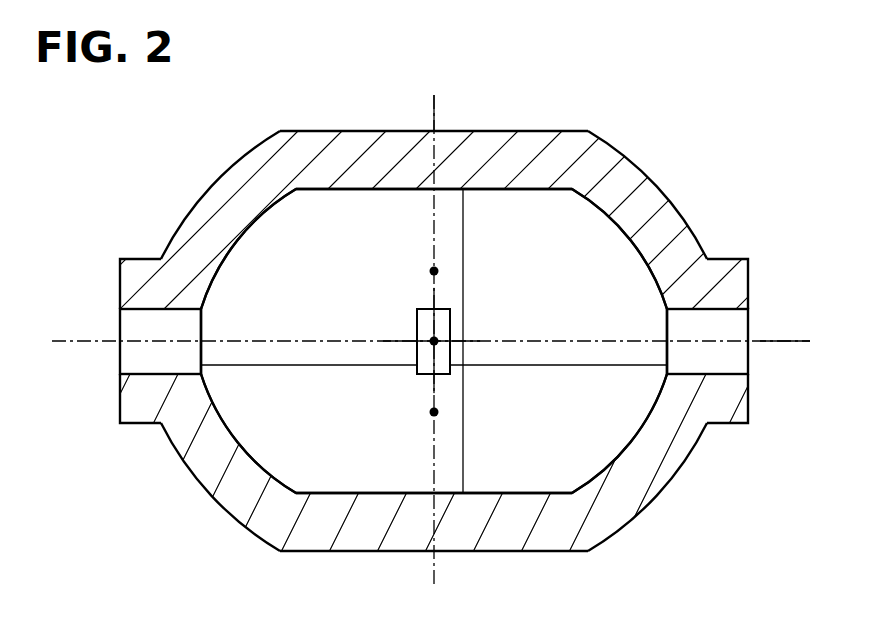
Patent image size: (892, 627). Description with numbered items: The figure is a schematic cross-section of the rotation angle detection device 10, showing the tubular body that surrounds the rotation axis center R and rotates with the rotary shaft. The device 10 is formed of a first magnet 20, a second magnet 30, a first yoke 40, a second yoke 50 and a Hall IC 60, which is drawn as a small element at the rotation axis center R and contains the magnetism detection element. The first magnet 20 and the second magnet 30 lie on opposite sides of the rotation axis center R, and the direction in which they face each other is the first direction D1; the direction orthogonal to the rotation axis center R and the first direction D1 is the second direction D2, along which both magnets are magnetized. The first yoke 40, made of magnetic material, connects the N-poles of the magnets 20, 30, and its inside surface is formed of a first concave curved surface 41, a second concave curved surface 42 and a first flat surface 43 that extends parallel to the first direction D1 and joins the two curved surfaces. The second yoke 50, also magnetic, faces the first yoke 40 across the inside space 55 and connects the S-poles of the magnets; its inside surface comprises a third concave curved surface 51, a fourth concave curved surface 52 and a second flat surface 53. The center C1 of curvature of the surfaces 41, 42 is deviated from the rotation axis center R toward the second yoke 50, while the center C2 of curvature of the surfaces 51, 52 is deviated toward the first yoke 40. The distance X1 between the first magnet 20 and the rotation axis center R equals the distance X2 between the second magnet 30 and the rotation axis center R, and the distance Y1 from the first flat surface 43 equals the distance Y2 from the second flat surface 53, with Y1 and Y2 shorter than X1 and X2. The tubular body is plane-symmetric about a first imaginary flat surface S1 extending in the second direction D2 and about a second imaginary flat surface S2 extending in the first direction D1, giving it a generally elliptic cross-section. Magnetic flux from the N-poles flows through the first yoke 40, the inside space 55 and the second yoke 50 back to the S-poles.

The rotation angle detection device 10 is at (216, 142).
The first magnet 20 is at (130, 322).
The second magnet 30 is at (733, 325).
The first yoke 40 is at (373, 143).
The first concave curved surface 41 is at (238, 232).
The second concave curved surface 42 is at (622, 236).
The first flat surface 43 is at (498, 189).
The second yoke 50 is at (475, 533).
The third concave curved surface 51 is at (232, 420).
The fourth concave curved surface 52 is at (625, 447).
The second flat surface 53 is at (395, 493).
The inside space 55 is at (547, 252).
The Hall IC 60 is at (417, 376).
The center of radius of curvature of the first and second concave curved surfaces C1 is at (432, 412).
The center of radius of curvature of the third and fourth concave curved surfaces C2 is at (432, 270).
The rotation axis center R is at (430, 344).
The first imaginary flat surface S1 is at (436, 116).
The second imaginary flat surface S2 is at (792, 345).
The distance between the first magnet and the rotation axis center X1 is at (309, 379).
The distance between the second magnet and the rotation axis center X2 is at (558, 379).
The distance between the first flat surface and the rotation axis center Y1 is at (463, 266).
The distance between the second flat surface and the rotation axis center Y2 is at (463, 435).
The first direction D1 is at (407, 338).
The second direction D2 is at (418, 318).